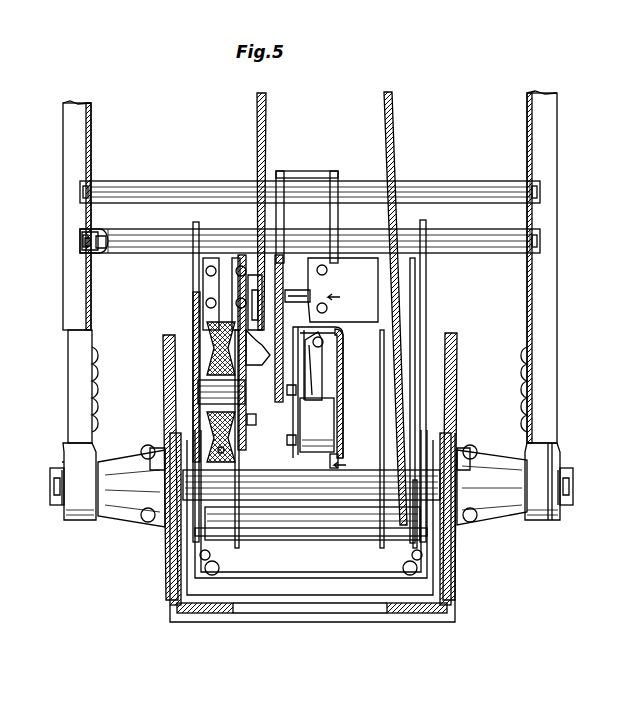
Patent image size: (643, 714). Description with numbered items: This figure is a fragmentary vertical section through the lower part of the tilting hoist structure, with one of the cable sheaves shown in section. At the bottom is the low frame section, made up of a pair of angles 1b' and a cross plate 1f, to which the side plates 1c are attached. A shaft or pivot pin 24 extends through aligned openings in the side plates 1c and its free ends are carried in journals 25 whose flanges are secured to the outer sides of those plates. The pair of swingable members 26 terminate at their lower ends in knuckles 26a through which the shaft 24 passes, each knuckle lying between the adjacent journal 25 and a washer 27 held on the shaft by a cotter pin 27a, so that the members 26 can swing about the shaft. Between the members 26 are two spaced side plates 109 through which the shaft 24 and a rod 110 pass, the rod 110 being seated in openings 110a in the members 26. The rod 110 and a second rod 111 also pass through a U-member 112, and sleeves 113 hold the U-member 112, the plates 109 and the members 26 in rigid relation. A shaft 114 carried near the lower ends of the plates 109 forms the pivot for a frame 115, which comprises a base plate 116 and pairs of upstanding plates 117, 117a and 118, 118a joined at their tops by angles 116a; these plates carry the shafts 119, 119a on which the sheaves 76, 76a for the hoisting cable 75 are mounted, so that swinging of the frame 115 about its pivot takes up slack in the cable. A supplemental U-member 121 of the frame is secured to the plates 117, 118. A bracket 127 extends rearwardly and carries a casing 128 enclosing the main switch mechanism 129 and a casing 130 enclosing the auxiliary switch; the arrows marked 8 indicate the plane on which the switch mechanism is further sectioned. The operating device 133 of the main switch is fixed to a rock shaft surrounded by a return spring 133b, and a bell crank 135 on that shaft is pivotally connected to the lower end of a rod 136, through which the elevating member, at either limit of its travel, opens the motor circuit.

The swingable member 26 is at (64, 146).
The second rod 111 is at (186, 182).
The sleeve 113 is at (166, 234).
The U-member 112 is at (304, 172).
The rod 136 is at (263, 165).
The cable 75 is at (392, 133).
The side plate 109 is at (193, 277).
The angle 116a is at (426, 300).
The bell crank 135 is at (228, 318).
The sheave 76a is at (210, 340).
The shaft 119a is at (246, 404).
The sheave 76 is at (398, 322).
The supplemental U-member 121 is at (350, 262).
The spring 133b is at (322, 306).
The section line 8 is at (343, 380).
The main switch mechanism 129 is at (343, 328).
The operating device 133 is at (318, 374).
The shaft 119 is at (300, 396).
The casing 128 is at (317, 425).
The casing 130 is at (300, 452).
The upstanding plate 118 is at (342, 470).
The side plate 1c is at (164, 392).
The upstanding plate 117a is at (165, 422).
The upstanding plate 118a is at (448, 432).
The angle 1b' is at (288, 537).
The cross plate 1f is at (255, 616).
The frame 115 is at (278, 522).
The bracket 127 is at (278, 465).
The shaft 114 is at (315, 522).
The base plate 116 is at (355, 526).
The upstanding plate 117 is at (272, 462).
The journal 25 is at (128, 520).
The knuckle 26a is at (82, 518).
The cotter pin 27a is at (56, 478).
The washer 27 is at (60, 505).
The shaft 24 is at (560, 470).
The rod 110 is at (80, 248).
The opening 110a is at (90, 258).